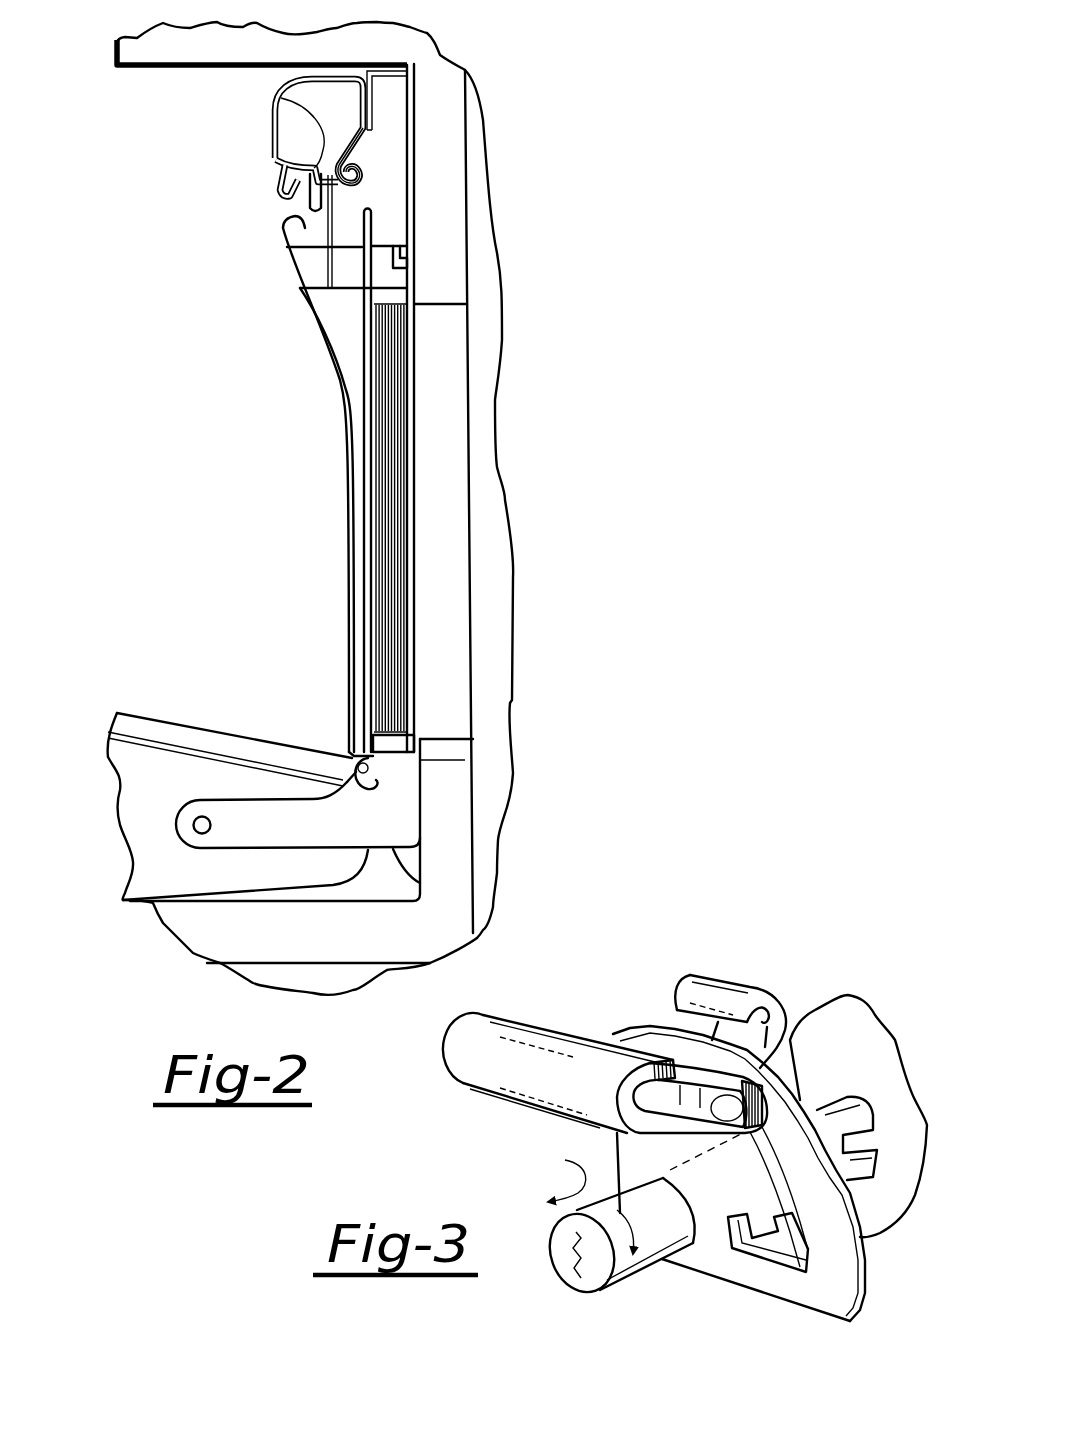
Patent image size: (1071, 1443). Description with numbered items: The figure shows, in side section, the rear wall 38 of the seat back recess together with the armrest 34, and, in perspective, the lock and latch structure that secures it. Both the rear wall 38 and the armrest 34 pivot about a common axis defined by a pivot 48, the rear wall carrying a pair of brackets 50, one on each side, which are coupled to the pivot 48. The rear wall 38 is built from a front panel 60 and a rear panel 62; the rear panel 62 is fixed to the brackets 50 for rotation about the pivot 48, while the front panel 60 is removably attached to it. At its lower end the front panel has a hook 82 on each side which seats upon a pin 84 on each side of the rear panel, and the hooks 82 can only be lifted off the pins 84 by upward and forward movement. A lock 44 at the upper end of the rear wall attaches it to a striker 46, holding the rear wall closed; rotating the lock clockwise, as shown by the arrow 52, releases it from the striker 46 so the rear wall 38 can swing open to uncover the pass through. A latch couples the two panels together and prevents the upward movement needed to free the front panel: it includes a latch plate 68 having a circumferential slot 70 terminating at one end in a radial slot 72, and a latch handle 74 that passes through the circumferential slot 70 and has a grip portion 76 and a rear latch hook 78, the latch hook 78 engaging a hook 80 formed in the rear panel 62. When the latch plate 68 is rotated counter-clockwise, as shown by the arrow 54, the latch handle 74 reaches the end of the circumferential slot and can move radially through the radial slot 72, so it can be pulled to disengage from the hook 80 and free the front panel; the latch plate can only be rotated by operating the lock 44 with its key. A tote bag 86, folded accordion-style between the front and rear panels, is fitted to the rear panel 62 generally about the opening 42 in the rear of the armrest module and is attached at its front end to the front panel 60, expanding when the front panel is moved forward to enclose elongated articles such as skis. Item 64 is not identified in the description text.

In FIG. 2, the armrest 34 is at (127, 768).
In FIG. 2, the rear wall 38 is at (261, 131).
In FIG. 2, the opening 42 is at (453, 708).
In FIG. 2, the lock 44 is at (305, 265).
In FIG. 3, the lock 44 is at (552, 1247).
In FIG. 2, the striker 46 is at (397, 246).
In FIG. 2, the pivot 48 is at (210, 820).
In FIG. 2, the bracket 50 is at (420, 878).
In FIG. 3, the arrow 52 is at (667, 1262).
In FIG. 3, the arrow 54 is at (565, 1160).
In FIG. 2, the front panel 60 is at (322, 333).
In FIG. 2, the rear panel 62 is at (414, 110).
In FIG. 2, the panel 64 is at (460, 837).
In FIG. 2, the latch plate 68 is at (343, 188).
In FIG. 3, the latch plate 68 is at (797, 1287).
In FIG. 3, the circumferential slot 70 is at (800, 1100).
In FIG. 3, the radial slot 72 is at (745, 1260).
In FIG. 2, the latch handle 74 is at (276, 108).
In FIG. 2, the grip portion 76 is at (278, 188).
In FIG. 3, the grip portion 76 is at (455, 1050).
In FIG. 2, the latch hook 78 is at (345, 168).
In FIG. 3, the latch hook 78 is at (730, 977).
In FIG. 2, the hook 80 is at (326, 207).
In FIG. 2, the hook 82 is at (353, 790).
In FIG. 2, the pin 84 is at (370, 770).
In FIG. 2, the tote bag 86 is at (415, 302).